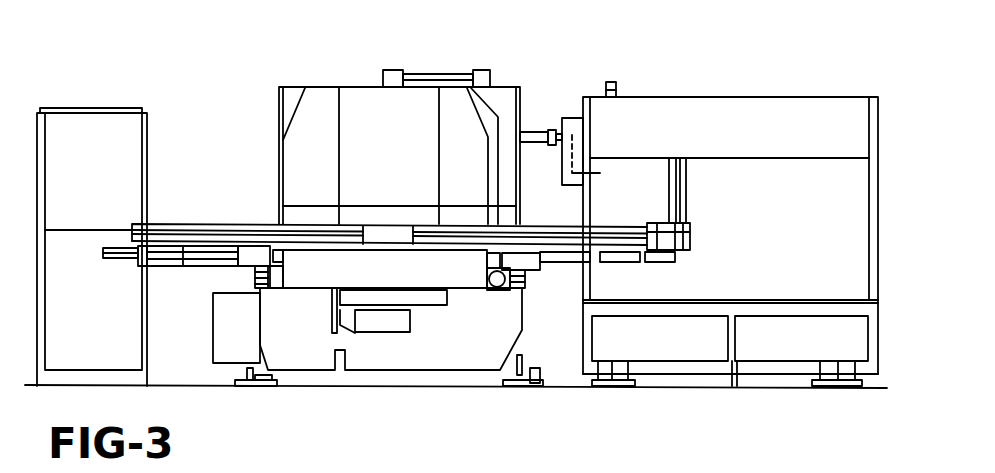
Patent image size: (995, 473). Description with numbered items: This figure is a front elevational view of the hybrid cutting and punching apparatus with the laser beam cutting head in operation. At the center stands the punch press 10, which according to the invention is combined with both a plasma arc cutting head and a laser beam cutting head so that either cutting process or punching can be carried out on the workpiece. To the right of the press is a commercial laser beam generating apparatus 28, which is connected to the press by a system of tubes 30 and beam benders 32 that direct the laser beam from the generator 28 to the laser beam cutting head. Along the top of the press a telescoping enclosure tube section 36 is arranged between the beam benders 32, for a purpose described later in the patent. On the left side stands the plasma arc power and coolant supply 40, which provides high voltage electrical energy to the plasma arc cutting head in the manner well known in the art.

The punch press 10 is at (296, 76).
The laser beam generating apparatus 28 is at (740, 97).
The tubes 30 is at (537, 130).
The beam benders 32 is at (386, 68).
The telescoping enclosure tube section 36 is at (425, 72).
The plasma arc power and coolant supply 40 is at (106, 108).